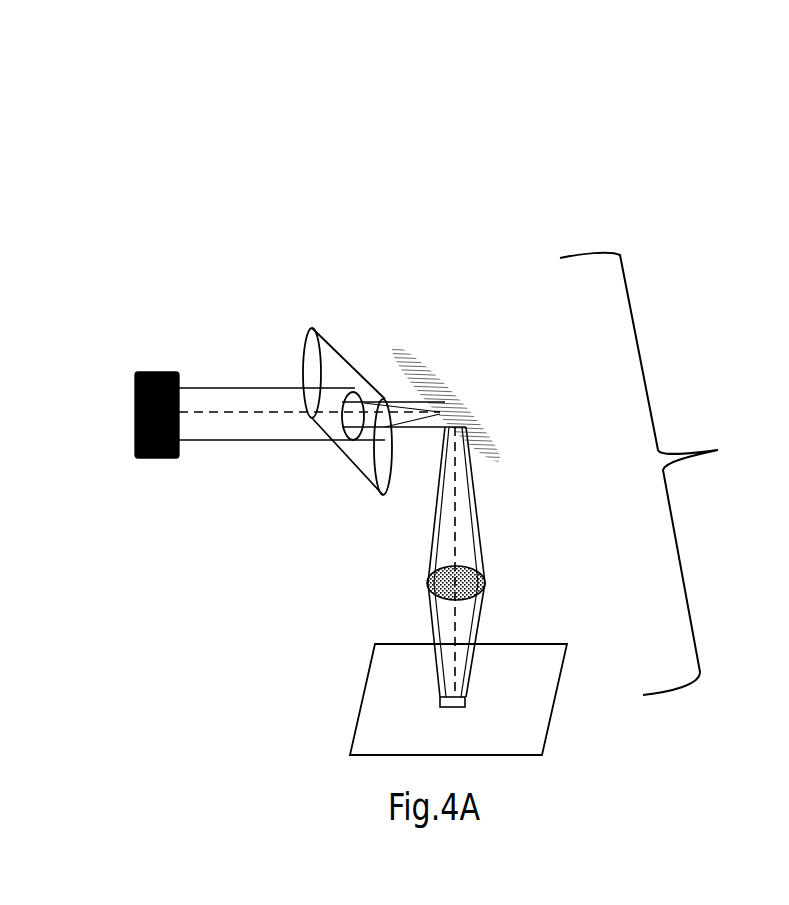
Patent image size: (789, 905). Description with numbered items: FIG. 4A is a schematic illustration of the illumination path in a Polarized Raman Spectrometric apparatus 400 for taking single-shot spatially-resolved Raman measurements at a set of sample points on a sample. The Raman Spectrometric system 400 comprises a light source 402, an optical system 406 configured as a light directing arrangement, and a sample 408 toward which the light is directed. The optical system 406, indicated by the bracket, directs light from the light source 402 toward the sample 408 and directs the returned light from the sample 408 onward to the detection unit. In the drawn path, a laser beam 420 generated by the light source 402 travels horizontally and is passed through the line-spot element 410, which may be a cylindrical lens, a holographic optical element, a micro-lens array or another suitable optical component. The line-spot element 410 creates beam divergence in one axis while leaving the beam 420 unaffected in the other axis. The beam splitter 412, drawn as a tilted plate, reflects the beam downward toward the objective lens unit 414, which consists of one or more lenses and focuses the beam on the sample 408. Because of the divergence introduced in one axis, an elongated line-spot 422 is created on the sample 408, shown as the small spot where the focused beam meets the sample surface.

The Polarized Raman Spectrometric apparatus 400 is at (712, 125).
The light source 402 is at (134, 410).
The optical system 406 is at (671, 474).
The sample 408 is at (370, 697).
The line-spot element 410 is at (365, 378).
The beam splitter 412 is at (437, 382).
The objective lens unit 414 is at (480, 575).
The laser beam 420 is at (277, 388).
The elongated line-spot 422 is at (452, 708).